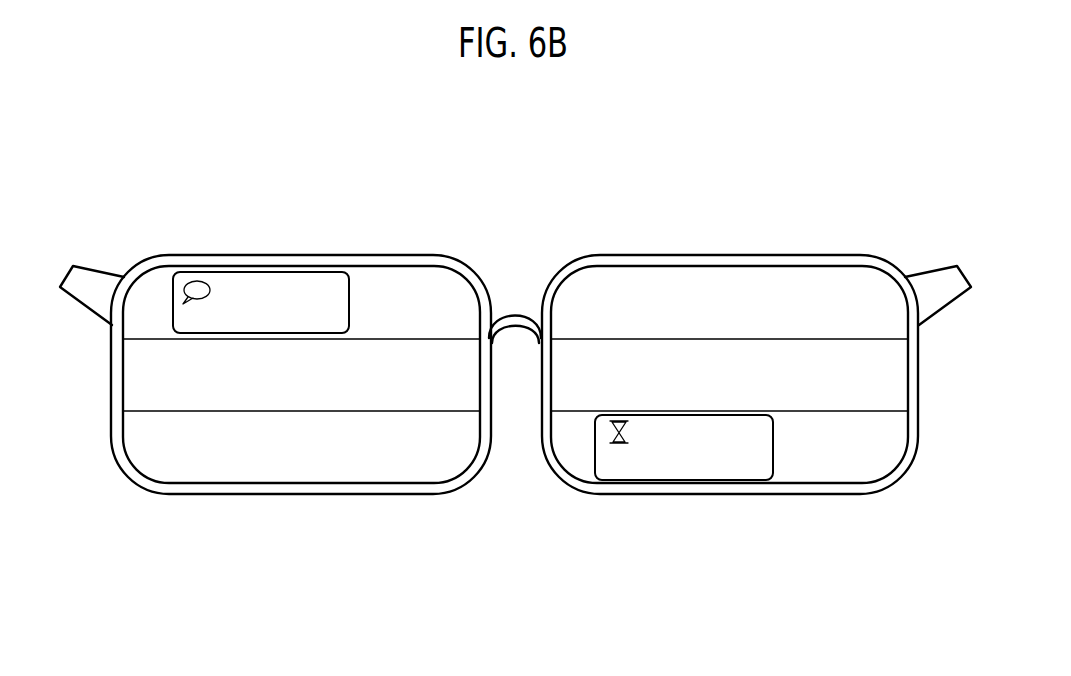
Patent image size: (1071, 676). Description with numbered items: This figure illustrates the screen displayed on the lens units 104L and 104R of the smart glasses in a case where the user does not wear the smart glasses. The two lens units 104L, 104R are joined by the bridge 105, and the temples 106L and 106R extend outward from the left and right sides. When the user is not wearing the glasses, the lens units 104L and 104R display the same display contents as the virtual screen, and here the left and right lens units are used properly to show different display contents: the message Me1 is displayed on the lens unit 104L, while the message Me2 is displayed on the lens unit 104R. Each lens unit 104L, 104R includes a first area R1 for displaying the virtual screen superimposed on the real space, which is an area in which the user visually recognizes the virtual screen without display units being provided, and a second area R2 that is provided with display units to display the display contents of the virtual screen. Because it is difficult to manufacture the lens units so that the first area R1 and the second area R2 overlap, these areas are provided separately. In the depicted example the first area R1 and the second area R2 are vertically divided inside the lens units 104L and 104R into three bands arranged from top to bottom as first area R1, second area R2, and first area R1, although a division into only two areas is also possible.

The lens unit 104L is at (390, 265).
The lens unit 104R is at (823, 265).
The bridge 105 is at (513, 313).
The temple 106L is at (103, 270).
The temple 106R is at (927, 273).
The first area R1 is at (142, 320).
The second area R2 is at (138, 373).
The message Me1 is at (217, 271).
The message Me2 is at (730, 481).